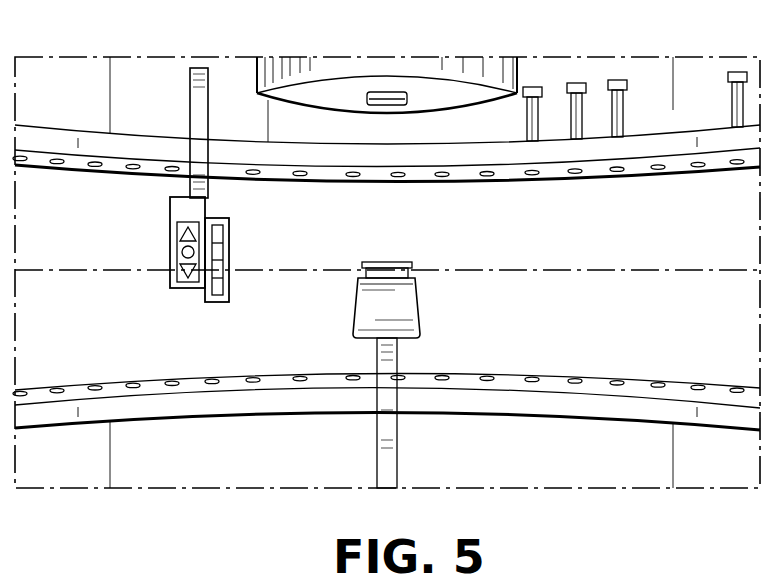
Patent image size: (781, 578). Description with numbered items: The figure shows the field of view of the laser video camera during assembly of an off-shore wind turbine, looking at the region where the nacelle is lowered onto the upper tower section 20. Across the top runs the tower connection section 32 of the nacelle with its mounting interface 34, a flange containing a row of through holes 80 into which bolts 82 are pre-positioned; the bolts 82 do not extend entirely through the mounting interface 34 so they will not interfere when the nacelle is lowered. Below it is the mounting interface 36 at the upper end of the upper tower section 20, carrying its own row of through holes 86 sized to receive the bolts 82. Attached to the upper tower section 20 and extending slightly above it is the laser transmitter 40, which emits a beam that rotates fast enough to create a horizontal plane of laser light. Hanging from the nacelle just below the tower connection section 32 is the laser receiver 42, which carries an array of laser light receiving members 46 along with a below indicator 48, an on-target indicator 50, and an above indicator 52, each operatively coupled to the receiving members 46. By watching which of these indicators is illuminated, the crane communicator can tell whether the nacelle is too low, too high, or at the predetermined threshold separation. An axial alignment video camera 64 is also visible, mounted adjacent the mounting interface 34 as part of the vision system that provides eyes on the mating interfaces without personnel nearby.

The upper tower section 20 is at (80, 474).
The tower connection section 32 is at (80, 113).
The mounting interface 34 is at (386, 184).
The mounting interface 36 is at (386, 383).
The laser transmitter 40 is at (420, 309).
The laser receiver 42 is at (206, 199).
The laser light receiving members 46 is at (229, 234).
The below indicator 48 is at (184, 270).
The on-target indicator 50 is at (181, 252).
The above indicator 52 is at (183, 231).
The axial alignment video camera 64 is at (405, 104).
The through holes 80 is at (658, 169).
The bolts 82 is at (576, 83).
The through holes 86 is at (658, 385).